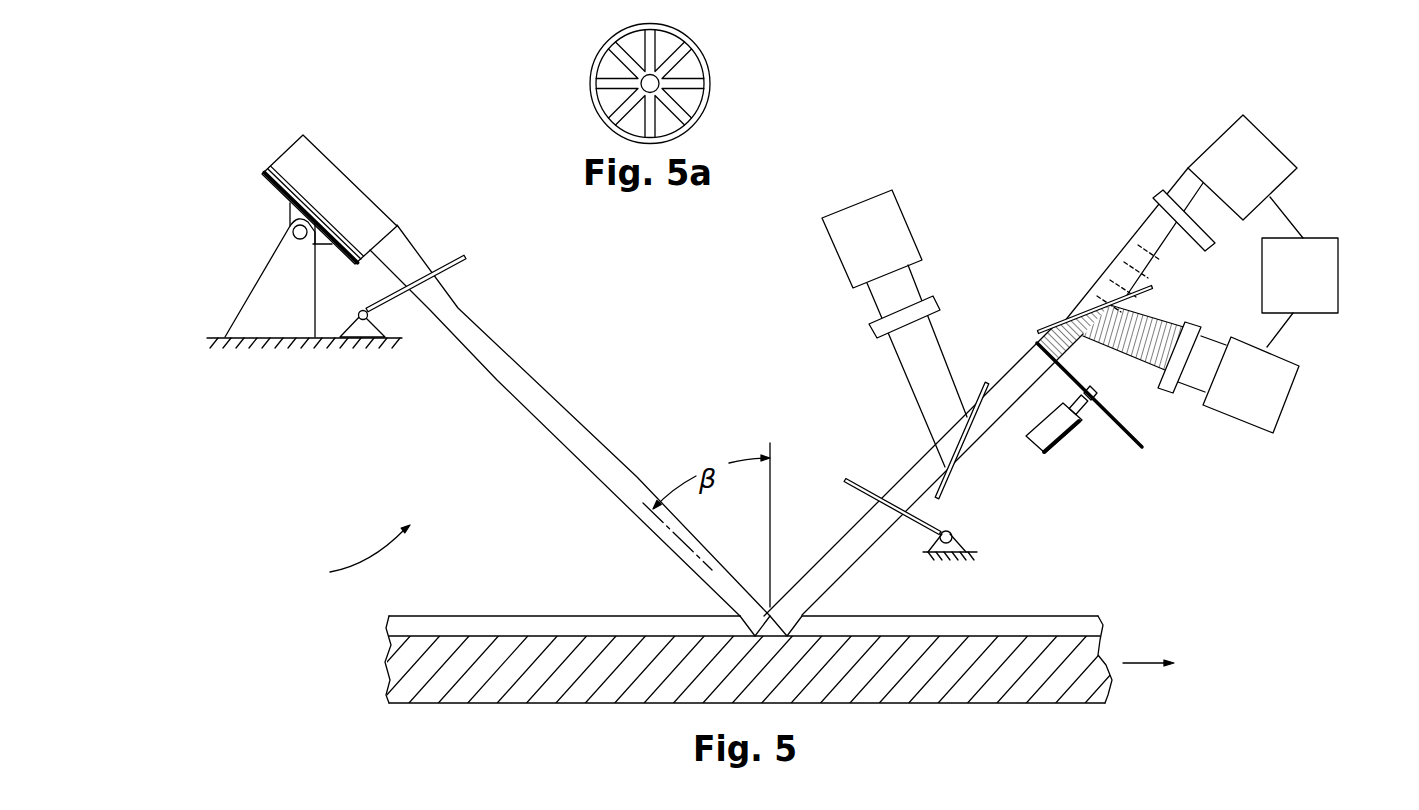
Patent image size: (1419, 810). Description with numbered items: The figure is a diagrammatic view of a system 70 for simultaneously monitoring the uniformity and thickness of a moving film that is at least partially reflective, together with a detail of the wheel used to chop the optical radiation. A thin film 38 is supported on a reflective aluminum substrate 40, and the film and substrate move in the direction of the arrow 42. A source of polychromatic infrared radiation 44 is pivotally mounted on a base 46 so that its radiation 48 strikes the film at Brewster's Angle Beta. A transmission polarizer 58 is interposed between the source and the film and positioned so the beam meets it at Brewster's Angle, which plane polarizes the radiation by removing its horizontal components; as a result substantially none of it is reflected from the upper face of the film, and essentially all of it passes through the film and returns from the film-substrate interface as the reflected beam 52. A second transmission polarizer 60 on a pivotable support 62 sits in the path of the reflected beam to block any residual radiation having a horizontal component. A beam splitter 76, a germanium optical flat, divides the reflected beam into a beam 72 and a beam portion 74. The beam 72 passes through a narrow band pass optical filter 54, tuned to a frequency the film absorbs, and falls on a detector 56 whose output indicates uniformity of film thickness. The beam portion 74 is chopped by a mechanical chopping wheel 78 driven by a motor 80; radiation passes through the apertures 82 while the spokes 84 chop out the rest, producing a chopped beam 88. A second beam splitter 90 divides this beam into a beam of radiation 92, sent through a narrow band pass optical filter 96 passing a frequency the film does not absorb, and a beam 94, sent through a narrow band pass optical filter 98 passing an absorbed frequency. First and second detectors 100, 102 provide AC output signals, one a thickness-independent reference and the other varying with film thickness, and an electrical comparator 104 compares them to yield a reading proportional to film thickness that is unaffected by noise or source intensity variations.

In FIG. 5, the film 38 is at (1030, 620).
In FIG. 5, the aluminum substrate 40 is at (1090, 703).
In FIG. 5, the arrow 42 is at (1143, 662).
In FIG. 5, the source of polychromatic infrared radiation 44 is at (362, 198).
In FIG. 5, the base 46 is at (270, 273).
In FIG. 5, the radiation 48 is at (507, 353).
In FIG. 5, the reflected beam 52 is at (860, 540).
In FIG. 5, the narrow band pass optical filter 54 is at (870, 320).
In FIG. 5, the detector 56 is at (842, 256).
In FIG. 5, the transmission polarizer 58 is at (457, 253).
In FIG. 5, the second transmission polarizer 60 is at (860, 481).
In FIG. 5, the pivotable support 62 is at (962, 537).
In FIG. 5, the system 70 is at (351, 554).
In FIG. 5, the beam 72 is at (905, 373).
In FIG. 5, the beam portion 74 is at (984, 427).
In FIG. 5, the beam splitter 76 is at (950, 484).
In FIG. 5, the mechanical chopping wheel 78 is at (1143, 438).
In FIG. 5a, the mechanical chopping wheel 78 is at (690, 30).
In FIG. 5, the motor 80 is at (1068, 438).
In FIG. 5a, the apertures 82 is at (690, 65).
In FIG. 5a, the spokes 84 is at (627, 53).
In FIG. 5, the beam 88 is at (1072, 350).
In FIG. 5, the second beam splitter 90 is at (1047, 328).
In FIG. 5, the beam of radiation 92 is at (1130, 252).
In FIG. 5, the beam 94 is at (1157, 318).
In FIG. 5, the narrow band pass optical filter 96 is at (1156, 193).
In FIG. 5, the narrow band pass optical filter 98 is at (1203, 323).
In FIG. 5, the first detector 100 is at (1272, 148).
In FIG. 5, the second detector 102 is at (1278, 398).
In FIG. 5, the electrical comparator 104 is at (1330, 257).